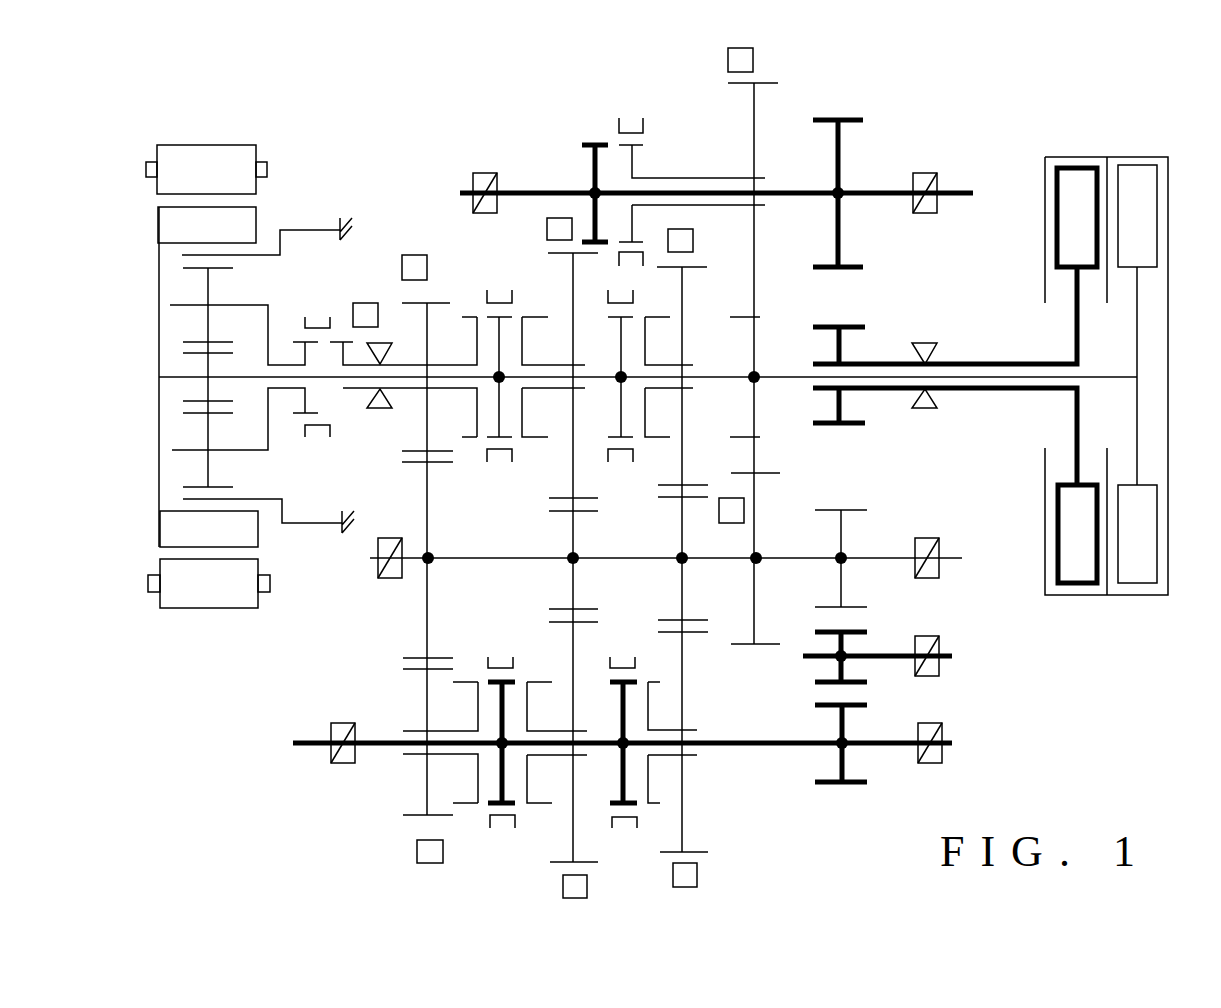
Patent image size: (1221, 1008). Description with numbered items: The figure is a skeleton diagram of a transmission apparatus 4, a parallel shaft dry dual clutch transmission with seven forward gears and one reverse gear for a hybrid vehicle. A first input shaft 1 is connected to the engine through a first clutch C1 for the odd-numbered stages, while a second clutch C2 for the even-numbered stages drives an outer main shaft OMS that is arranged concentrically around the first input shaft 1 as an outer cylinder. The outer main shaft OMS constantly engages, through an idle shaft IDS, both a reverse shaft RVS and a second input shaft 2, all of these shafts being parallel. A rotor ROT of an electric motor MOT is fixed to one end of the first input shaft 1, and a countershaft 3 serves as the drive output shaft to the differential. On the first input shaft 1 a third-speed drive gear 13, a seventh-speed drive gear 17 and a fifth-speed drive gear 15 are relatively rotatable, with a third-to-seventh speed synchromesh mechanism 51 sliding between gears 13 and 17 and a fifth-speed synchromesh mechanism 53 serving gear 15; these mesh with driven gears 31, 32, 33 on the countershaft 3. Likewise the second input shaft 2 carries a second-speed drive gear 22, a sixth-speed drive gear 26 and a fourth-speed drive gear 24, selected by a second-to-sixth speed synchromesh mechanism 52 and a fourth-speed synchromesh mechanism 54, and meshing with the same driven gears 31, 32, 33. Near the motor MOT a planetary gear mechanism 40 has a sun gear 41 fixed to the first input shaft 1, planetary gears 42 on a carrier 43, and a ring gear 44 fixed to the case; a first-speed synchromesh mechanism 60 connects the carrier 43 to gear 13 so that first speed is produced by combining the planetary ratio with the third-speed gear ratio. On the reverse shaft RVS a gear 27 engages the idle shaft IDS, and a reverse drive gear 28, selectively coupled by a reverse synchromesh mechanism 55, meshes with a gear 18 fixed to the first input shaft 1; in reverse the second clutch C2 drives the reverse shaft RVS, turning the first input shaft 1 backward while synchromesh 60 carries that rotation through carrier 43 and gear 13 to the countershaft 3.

The first input shaft 1 is at (800, 390).
The second input shaft 2 is at (768, 740).
The countershaft 3 is at (780, 555).
The transmission apparatus 4 is at (925, 115).
The third-speed drive gear 13 is at (435, 302).
The fifth-speed drive gear 15 is at (692, 266).
The seventh-speed drive gear 17 is at (550, 253).
The gear 18 is at (808, 302).
The second-speed drive gear 22 is at (440, 815).
The fourth-speed drive gear 24 is at (700, 850).
The sixth-speed drive gear 26 is at (585, 860).
The gear 27 is at (832, 120).
The reverse drive gear 28 is at (757, 88).
The driven gear 31 is at (440, 463).
The driven gear 32 is at (585, 512).
The driven gear 33 is at (680, 497).
The planetary gear mechanism 40 is at (283, 433).
The sun gear 41 is at (208, 367).
The planetary gears 42 is at (220, 268).
The carrier 43 is at (268, 305).
The ring gear 44 is at (280, 258).
The third-to-seventh speed synchromesh mechanism 51 is at (522, 308).
The second-to-sixth speed synchromesh mechanism 52 is at (508, 657).
The fifth-speed synchromesh mechanism 53 is at (634, 316).
The fourth-speed synchromesh mechanism 54 is at (618, 657).
The reverse synchromesh mechanism 55 is at (645, 122).
The first-speed synchromesh mechanism 60 is at (335, 312).
The electric motor MOT is at (203, 118).
The rotor ROT is at (158, 278).
The reverse shaft RVS is at (853, 192).
The outer main shaft OMS is at (955, 362).
The idle shaft IDS is at (887, 654).
The first clutch C1 is at (1150, 162).
The second clutch C2 is at (1082, 162).